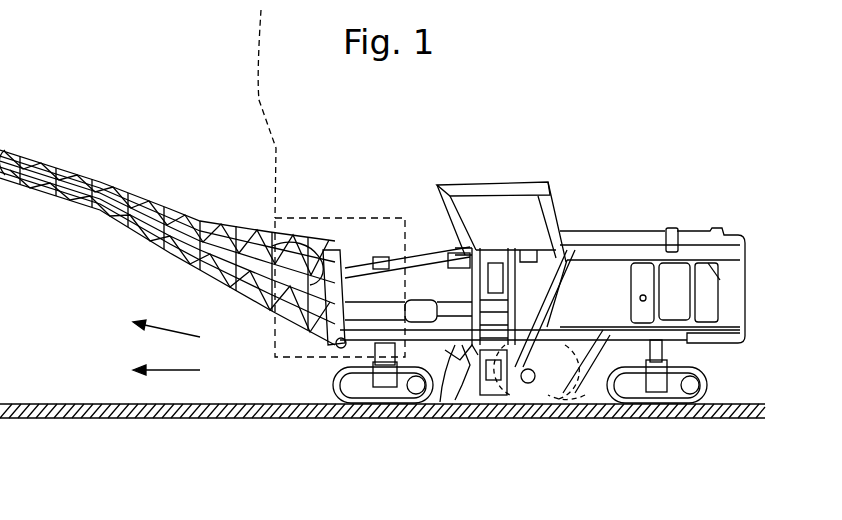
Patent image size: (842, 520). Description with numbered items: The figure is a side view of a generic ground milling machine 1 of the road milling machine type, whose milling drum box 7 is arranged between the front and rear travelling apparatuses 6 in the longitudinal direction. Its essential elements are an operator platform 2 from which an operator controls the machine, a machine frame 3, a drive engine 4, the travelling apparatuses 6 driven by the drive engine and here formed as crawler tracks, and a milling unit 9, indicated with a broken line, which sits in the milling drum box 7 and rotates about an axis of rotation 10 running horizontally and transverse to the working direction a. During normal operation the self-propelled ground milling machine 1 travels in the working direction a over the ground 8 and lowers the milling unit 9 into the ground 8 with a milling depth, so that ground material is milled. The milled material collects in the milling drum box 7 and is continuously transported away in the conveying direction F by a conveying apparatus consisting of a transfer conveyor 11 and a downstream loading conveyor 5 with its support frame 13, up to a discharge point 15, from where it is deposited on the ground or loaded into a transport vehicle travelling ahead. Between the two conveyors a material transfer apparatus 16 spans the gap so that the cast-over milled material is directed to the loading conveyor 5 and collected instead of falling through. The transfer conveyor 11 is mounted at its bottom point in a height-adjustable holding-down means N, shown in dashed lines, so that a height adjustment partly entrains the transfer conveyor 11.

The ground milling machine 1 is at (563, 152).
The operator platform 2 is at (503, 217).
The machine frame 3 is at (397, 280).
The drive engine 4 is at (613, 277).
The loading conveyor 5 is at (187, 257).
The travelling apparatuses 6 is at (367, 387).
The milling drum box 7 is at (577, 383).
The ground 8 is at (230, 410).
The milling unit 9 is at (555, 400).
The axis of rotation 10 is at (530, 383).
The transfer conveyor 11 is at (457, 350).
The support frame 13 is at (272, 307).
The discharge point 15 is at (167, 200).
The material transfer apparatus 16 is at (350, 236).
The holding-down means N is at (463, 407).
The conveying direction F is at (154, 324).
The working direction a is at (151, 371).